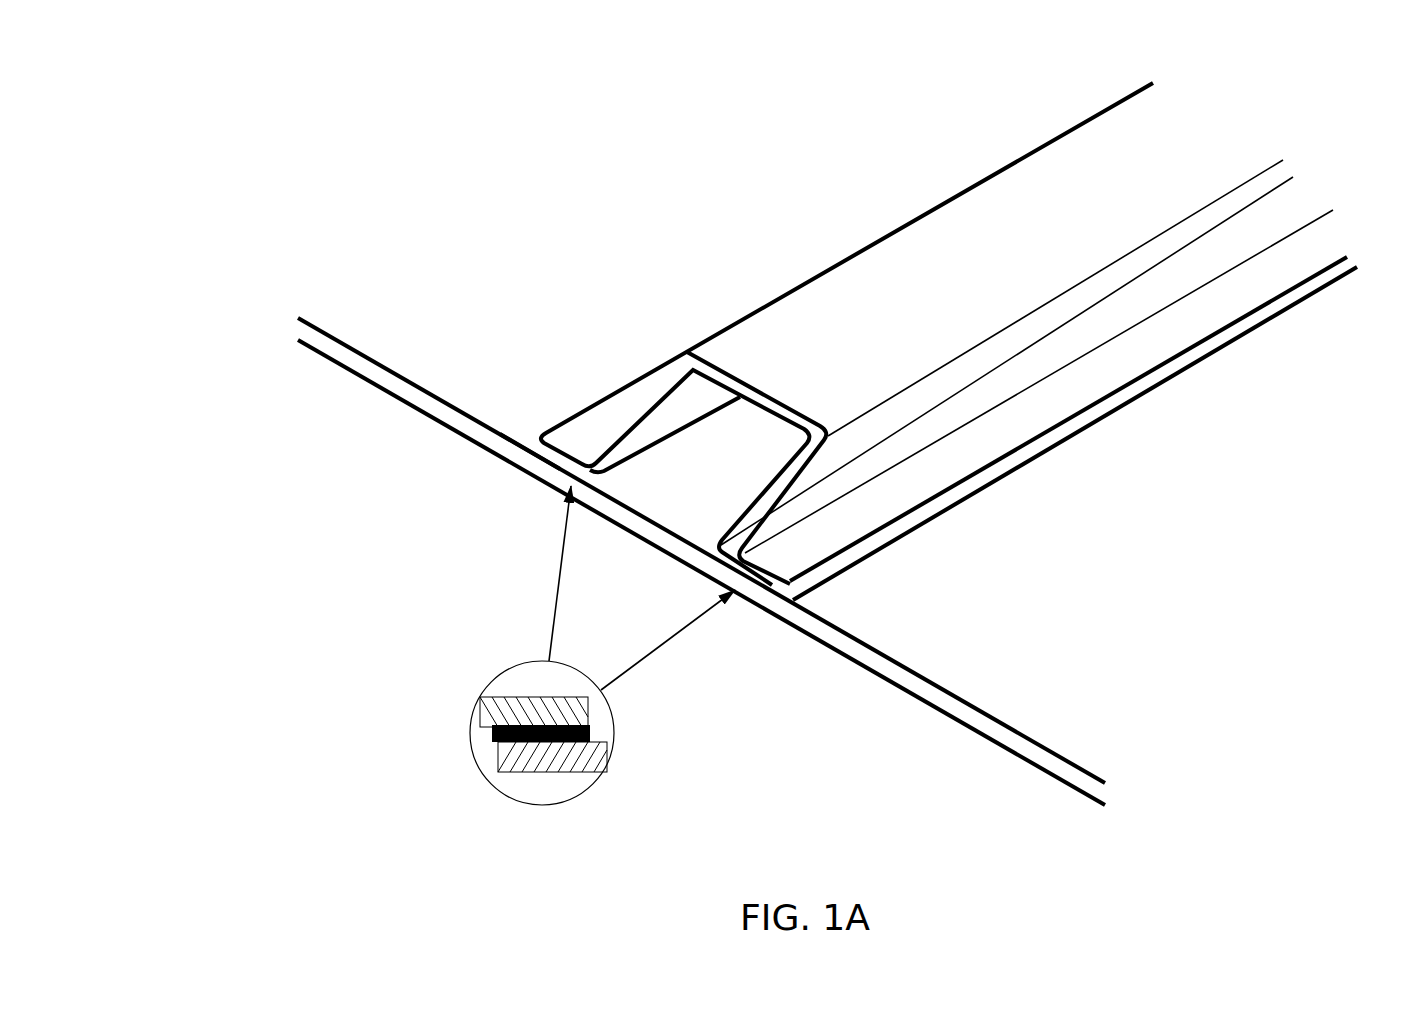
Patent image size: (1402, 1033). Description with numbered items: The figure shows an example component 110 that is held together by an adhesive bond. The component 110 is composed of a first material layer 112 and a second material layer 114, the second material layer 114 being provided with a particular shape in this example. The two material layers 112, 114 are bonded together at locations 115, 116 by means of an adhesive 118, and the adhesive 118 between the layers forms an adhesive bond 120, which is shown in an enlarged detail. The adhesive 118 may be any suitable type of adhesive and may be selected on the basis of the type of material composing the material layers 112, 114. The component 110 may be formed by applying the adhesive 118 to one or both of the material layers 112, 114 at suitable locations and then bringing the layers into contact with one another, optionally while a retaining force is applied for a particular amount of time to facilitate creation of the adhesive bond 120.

The component 110 is at (713, 465).
The first material layer 112 is at (347, 315).
The second material layer 114 is at (750, 327).
The location 115 is at (528, 478).
The location 116 is at (835, 603).
The adhesive 118 is at (490, 743).
The adhesive bond 120 is at (568, 802).